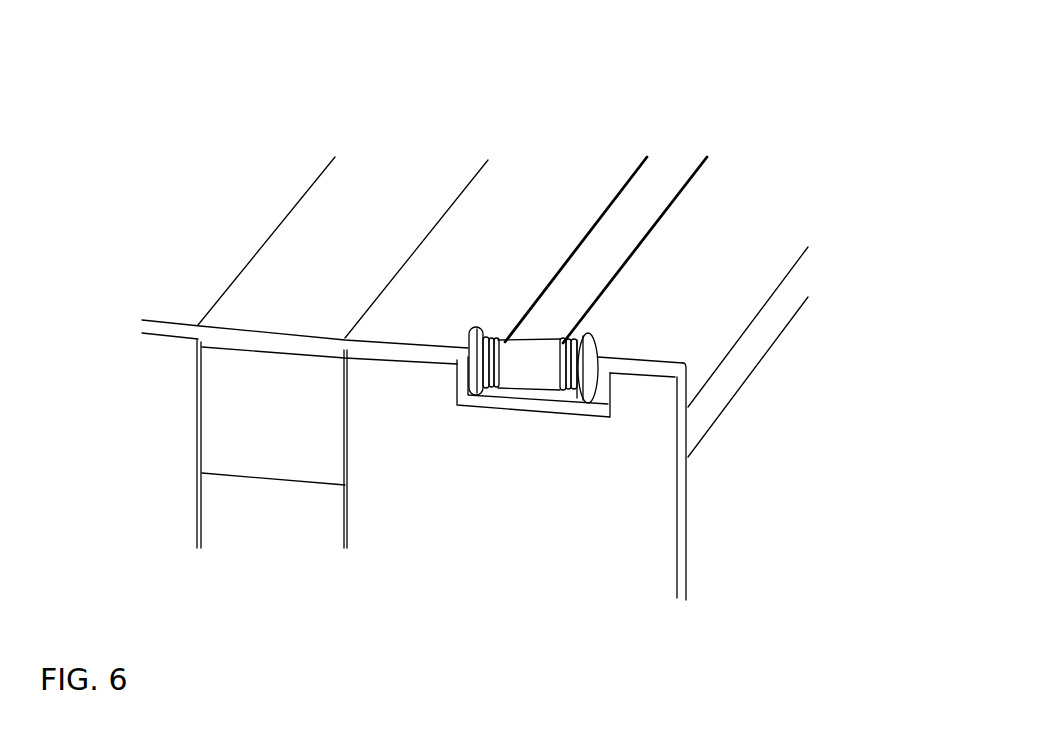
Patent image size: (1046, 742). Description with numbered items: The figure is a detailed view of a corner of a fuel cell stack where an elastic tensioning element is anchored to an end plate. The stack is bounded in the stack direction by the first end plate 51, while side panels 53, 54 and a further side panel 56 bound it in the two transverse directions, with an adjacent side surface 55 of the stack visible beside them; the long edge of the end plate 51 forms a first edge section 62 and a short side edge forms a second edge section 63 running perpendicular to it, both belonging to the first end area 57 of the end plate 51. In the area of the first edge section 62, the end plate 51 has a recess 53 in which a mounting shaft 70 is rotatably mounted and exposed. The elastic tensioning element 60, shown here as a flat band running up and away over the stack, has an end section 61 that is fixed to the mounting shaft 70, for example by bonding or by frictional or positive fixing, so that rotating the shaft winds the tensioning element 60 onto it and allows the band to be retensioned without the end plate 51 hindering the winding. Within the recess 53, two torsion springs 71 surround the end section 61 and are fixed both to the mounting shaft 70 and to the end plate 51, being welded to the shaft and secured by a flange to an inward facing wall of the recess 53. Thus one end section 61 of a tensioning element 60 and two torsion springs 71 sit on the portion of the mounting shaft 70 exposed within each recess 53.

The first end plate 51 is at (168, 472).
The recess 53 is at (520, 403).
The side panel 54 is at (745, 347).
The first side edge 55 is at (303, 243).
The side panel 56 is at (525, 190).
The first end area 57 is at (632, 502).
The elastic tensioning element 60 is at (653, 183).
The end section of tensioning element 61 is at (540, 362).
The first edge section 62 is at (432, 350).
The second edge section 63 is at (681, 483).
The mounting shaft 70 is at (495, 333).
The torsion spring 71 is at (570, 337).